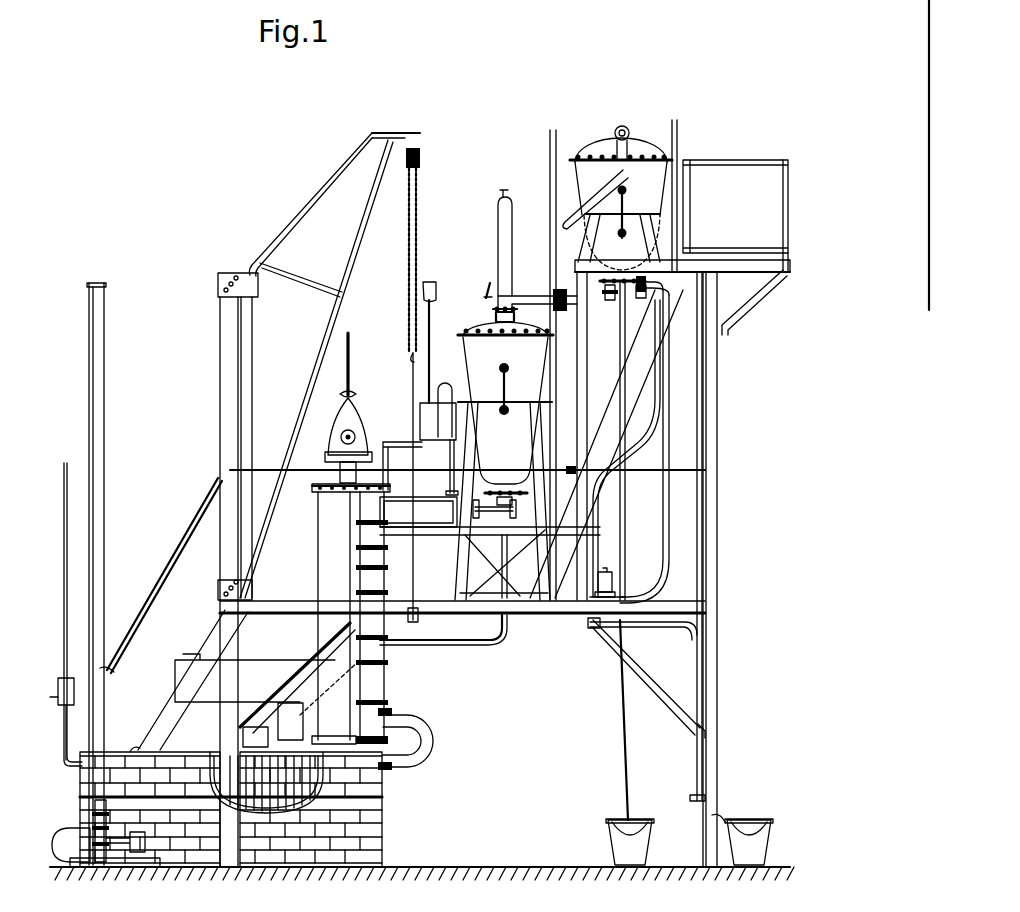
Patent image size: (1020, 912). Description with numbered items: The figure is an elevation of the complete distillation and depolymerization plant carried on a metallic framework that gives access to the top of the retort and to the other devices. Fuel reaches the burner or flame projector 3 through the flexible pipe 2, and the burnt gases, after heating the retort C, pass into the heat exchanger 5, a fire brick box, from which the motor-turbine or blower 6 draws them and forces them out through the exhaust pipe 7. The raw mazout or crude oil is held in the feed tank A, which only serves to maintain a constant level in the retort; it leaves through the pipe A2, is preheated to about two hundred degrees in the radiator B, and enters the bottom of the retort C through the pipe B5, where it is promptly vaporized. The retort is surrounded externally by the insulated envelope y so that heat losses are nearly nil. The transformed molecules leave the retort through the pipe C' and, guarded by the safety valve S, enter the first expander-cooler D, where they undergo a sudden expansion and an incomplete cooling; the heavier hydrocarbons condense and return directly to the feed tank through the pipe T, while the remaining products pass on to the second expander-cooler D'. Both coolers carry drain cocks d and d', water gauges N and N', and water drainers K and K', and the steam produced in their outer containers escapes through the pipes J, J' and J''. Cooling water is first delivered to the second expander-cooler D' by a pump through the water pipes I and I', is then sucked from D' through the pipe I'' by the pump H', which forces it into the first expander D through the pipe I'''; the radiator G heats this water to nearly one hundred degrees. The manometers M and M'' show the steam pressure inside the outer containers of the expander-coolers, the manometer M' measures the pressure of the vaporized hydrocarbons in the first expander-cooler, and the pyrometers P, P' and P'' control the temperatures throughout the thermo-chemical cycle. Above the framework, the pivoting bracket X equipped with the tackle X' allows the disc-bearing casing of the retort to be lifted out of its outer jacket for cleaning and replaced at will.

The pivoting bracket X is at (260, 403).
The tackle X' is at (430, 385).
The exhaust pipe 7 is at (100, 378).
The flexible pipe 2 is at (350, 366).
The burner or flame projector 3 is at (360, 440).
The safety valve S is at (438, 410).
The manometer M is at (440, 342).
The manometer M' is at (477, 275).
The manometer M'' is at (595, 176).
The pyrometer P' is at (537, 243).
The pyrometer P'' is at (640, 129).
The pyrometer P is at (472, 530).
The steam pipe J is at (80, 614).
The steam pipe J' is at (539, 365).
The steam pipe J'' is at (693, 195).
The first expander-cooler D is at (504, 454).
The second expander-cooler D' is at (621, 191).
The water gauge N is at (515, 389).
The water gauge N' is at (668, 212).
The drain cock d is at (494, 528).
The drain cock d' is at (624, 308).
The water drainer K is at (588, 456).
The water drainer K' is at (696, 317).
The water pipe I is at (295, 681).
The water pipe I' is at (626, 448).
The water pipe I'' is at (684, 446).
The water pipe I''' is at (619, 564).
The pump H' is at (621, 578).
The retort C is at (339, 614).
The pipe C' is at (418, 512).
The feed tank A is at (245, 680).
The pipe A2 is at (270, 716).
The radiator G is at (255, 752).
The radiator B is at (286, 765).
The pipe B5 is at (430, 745).
The heat exchanger 5 is at (158, 782).
The motor-turbine 6 is at (92, 830).
The insulated envelope y is at (392, 705).
The pipe T is at (490, 645).